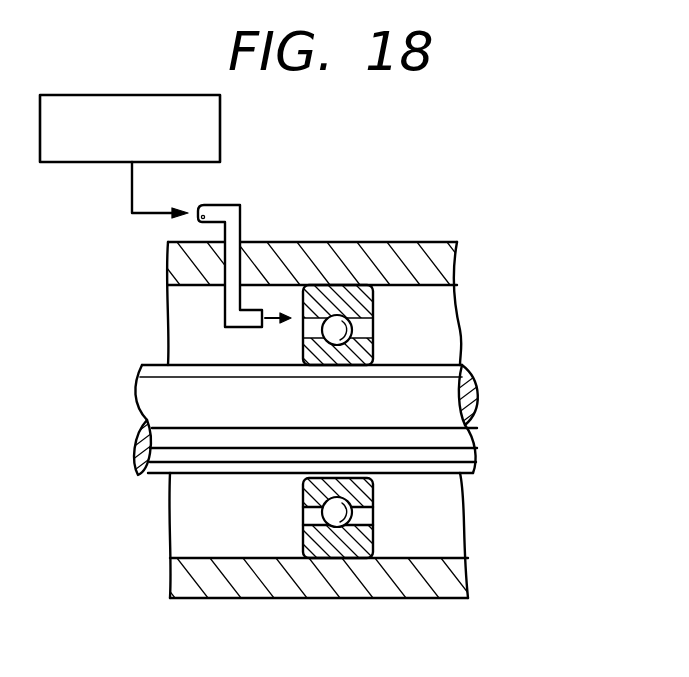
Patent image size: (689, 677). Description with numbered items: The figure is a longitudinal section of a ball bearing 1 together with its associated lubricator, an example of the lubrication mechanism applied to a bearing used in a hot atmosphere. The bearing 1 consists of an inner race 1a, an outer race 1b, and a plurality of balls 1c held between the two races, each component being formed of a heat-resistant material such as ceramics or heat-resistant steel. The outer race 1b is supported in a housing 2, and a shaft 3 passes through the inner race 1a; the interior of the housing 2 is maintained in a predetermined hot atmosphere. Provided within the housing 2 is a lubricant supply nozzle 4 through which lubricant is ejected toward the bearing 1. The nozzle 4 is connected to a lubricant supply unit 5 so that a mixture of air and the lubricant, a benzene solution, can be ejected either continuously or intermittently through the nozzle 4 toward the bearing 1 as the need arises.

The ball bearing 1 is at (373, 328).
The inner race 1a is at (302, 492).
The outer race 1b is at (310, 540).
The balls 1c is at (345, 510).
The housing 2 is at (422, 250).
The shaft 3 is at (190, 457).
The lubricant supply nozzle 4 is at (242, 322).
The lubricant supply unit 5 is at (220, 142).